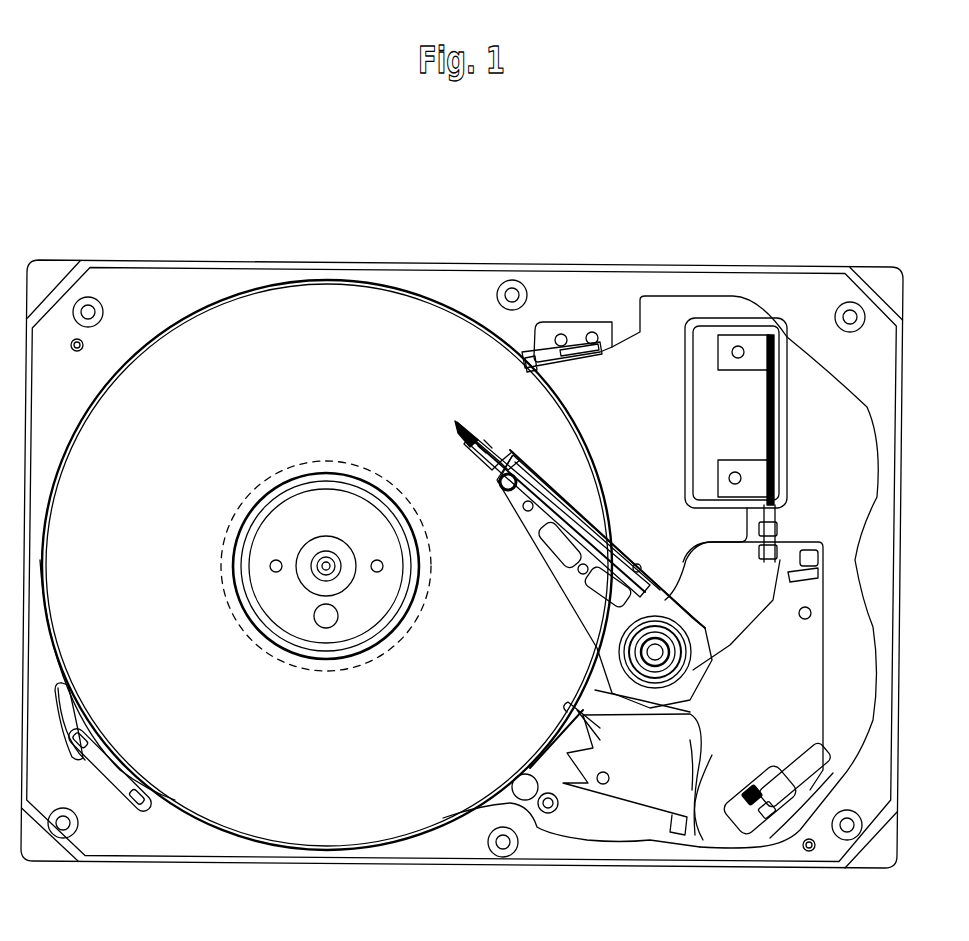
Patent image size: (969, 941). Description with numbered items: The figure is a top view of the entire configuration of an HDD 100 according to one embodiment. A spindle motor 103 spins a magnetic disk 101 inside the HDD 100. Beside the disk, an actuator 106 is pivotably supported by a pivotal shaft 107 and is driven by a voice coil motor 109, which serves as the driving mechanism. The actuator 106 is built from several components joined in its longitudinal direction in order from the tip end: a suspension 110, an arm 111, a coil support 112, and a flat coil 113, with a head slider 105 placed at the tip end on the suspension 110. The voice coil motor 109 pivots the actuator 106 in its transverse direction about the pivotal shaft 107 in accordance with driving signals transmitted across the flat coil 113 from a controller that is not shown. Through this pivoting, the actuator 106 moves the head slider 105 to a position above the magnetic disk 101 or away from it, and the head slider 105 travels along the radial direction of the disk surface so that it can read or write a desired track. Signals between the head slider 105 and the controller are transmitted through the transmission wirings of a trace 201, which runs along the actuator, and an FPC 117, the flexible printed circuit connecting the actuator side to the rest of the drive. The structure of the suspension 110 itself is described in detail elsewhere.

The HDD 100 is at (467, 212).
The magnetic disk 101 is at (583, 442).
The spindle motor 103 is at (270, 655).
The head slider 105 is at (457, 423).
The actuator 106 is at (512, 548).
The pivotal shaft 107 is at (640, 652).
The voice coil motor 109 is at (590, 825).
The suspension 110 is at (490, 455).
The arm 111 is at (560, 585).
The coil support 112 is at (825, 710).
The flat coil 113 is at (692, 790).
The FPC 117 is at (690, 585).
The trace 201 is at (610, 530).